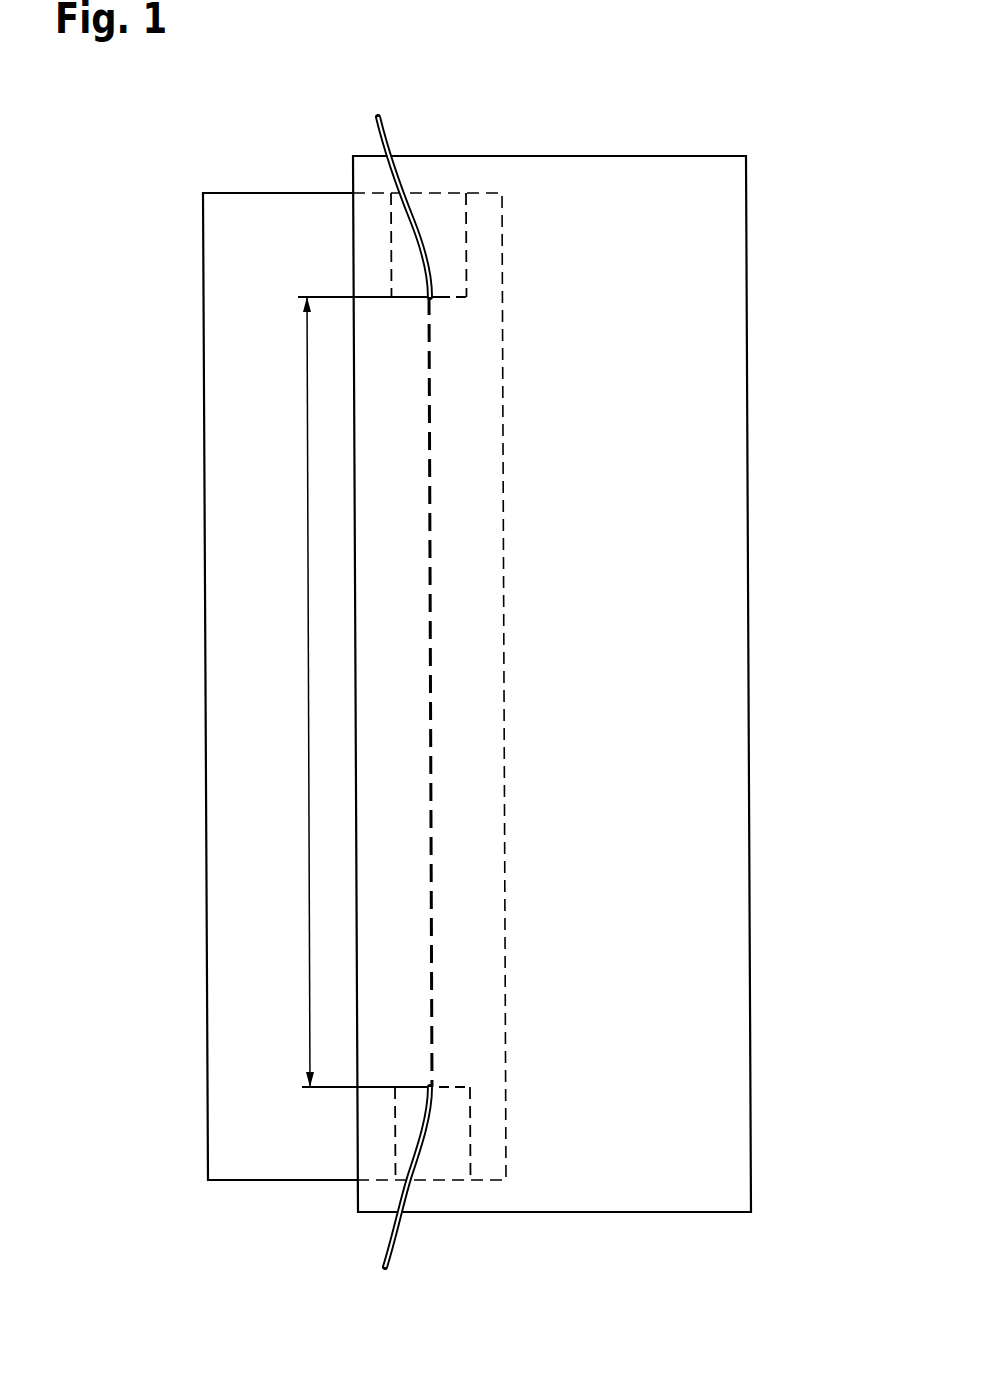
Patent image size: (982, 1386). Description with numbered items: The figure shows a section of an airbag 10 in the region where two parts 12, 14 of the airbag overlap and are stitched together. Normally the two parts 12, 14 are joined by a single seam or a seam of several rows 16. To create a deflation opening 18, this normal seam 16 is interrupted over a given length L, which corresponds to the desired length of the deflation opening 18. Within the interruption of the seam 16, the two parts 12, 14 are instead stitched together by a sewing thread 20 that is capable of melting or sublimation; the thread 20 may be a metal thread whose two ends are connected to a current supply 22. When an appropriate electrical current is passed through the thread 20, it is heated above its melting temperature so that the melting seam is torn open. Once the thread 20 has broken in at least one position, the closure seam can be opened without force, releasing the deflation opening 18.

The airbag 10 is at (811, 107).
The part of the airbag 12 is at (232, 547).
The part of the airbag 14 is at (715, 543).
The seam 16 is at (467, 220).
The deflation opening 18 is at (537, 391).
The sewing thread 20 is at (433, 722).
The current supply 22 is at (394, 132).
The length L is at (308, 702).